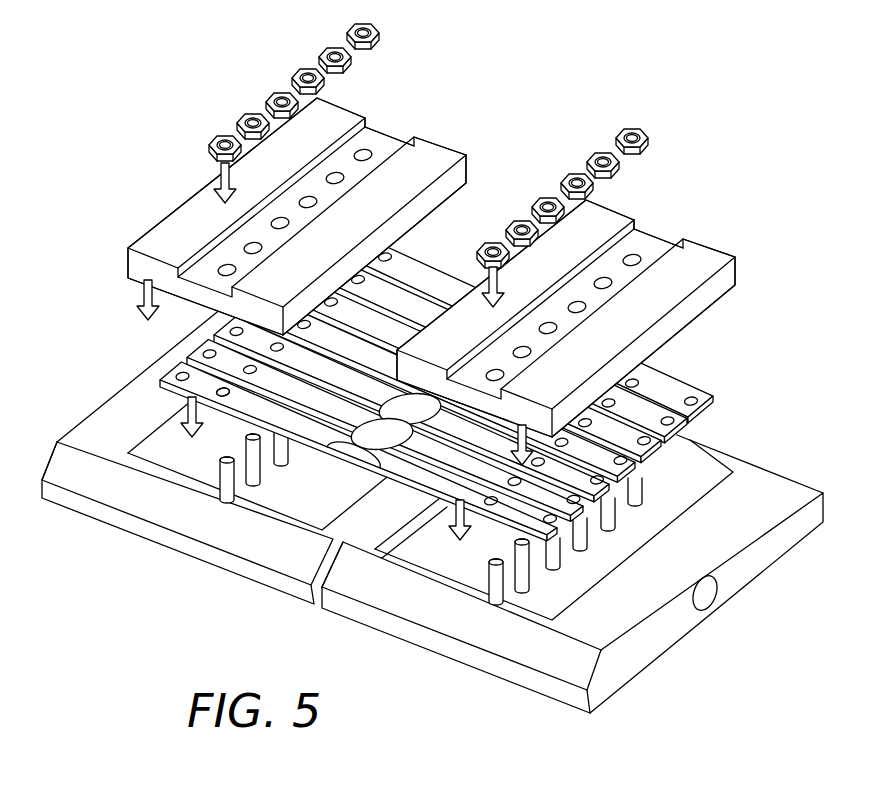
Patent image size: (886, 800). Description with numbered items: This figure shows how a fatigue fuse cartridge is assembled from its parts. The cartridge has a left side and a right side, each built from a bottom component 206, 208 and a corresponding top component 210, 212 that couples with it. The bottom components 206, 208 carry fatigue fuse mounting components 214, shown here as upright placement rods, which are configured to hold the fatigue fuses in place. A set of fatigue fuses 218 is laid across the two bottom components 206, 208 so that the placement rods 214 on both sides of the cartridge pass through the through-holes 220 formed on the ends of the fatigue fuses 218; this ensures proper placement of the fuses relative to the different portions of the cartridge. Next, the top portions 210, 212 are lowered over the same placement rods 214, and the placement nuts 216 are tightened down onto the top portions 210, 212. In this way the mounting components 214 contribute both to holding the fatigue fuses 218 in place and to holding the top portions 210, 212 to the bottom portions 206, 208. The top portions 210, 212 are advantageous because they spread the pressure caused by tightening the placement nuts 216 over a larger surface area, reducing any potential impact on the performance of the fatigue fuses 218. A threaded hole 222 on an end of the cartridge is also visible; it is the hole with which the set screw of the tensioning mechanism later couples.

The bottom component 206 is at (95, 420).
The bottom component 208 is at (775, 472).
The top component 210 is at (156, 225).
The top component 212 is at (710, 252).
The fatigue fuse mounting components 214 is at (257, 485).
The placement nuts 216 is at (240, 118).
The fatigue fuses 218 is at (192, 362).
The through-holes 220 is at (226, 400).
The threaded hole 222 is at (710, 597).